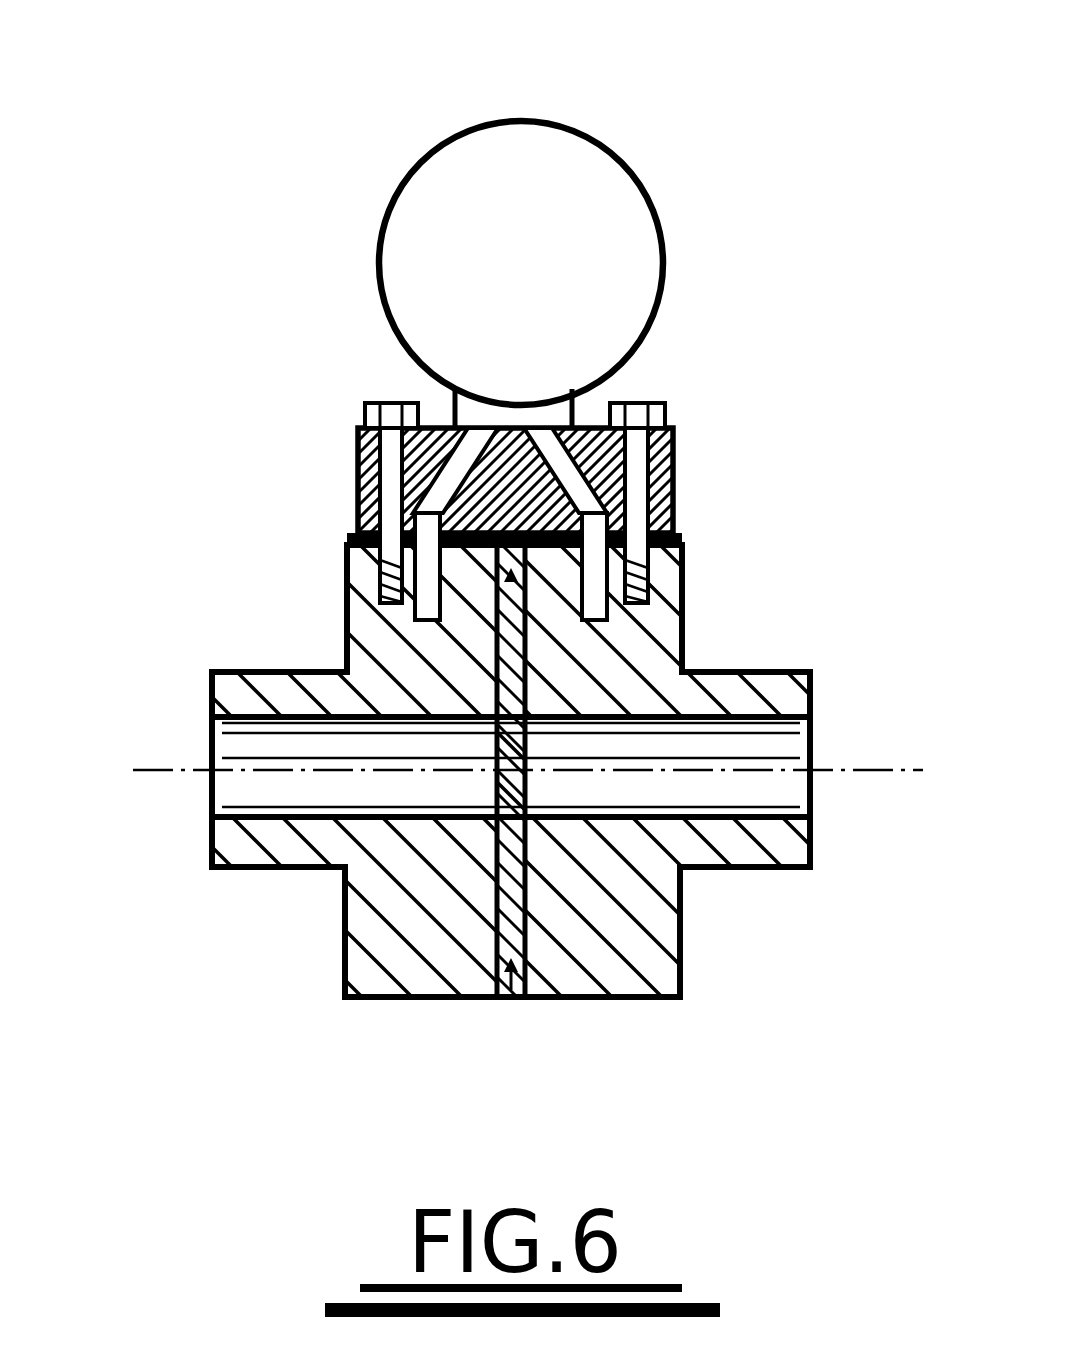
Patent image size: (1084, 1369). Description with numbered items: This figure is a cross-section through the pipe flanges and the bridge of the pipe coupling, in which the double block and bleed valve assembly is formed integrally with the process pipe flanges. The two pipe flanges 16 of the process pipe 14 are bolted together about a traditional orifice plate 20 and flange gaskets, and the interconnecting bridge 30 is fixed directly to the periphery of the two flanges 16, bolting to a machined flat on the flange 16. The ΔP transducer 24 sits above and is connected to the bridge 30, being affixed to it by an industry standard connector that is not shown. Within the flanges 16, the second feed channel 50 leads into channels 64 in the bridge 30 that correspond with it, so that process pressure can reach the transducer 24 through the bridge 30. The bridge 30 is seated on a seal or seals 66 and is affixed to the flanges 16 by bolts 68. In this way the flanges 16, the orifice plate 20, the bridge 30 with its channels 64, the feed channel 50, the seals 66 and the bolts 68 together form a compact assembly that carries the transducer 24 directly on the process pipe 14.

The process pipe 14 is at (243, 692).
The pipe flange 16 is at (363, 638).
The orifice plate 20 is at (512, 1000).
The ΔP transducer 24 is at (525, 247).
The bridge 30 is at (673, 460).
The second feed channel 50 is at (365, 546).
The channel 64 is at (452, 495).
The seal 66 is at (427, 582).
The bolt 68 is at (383, 403).